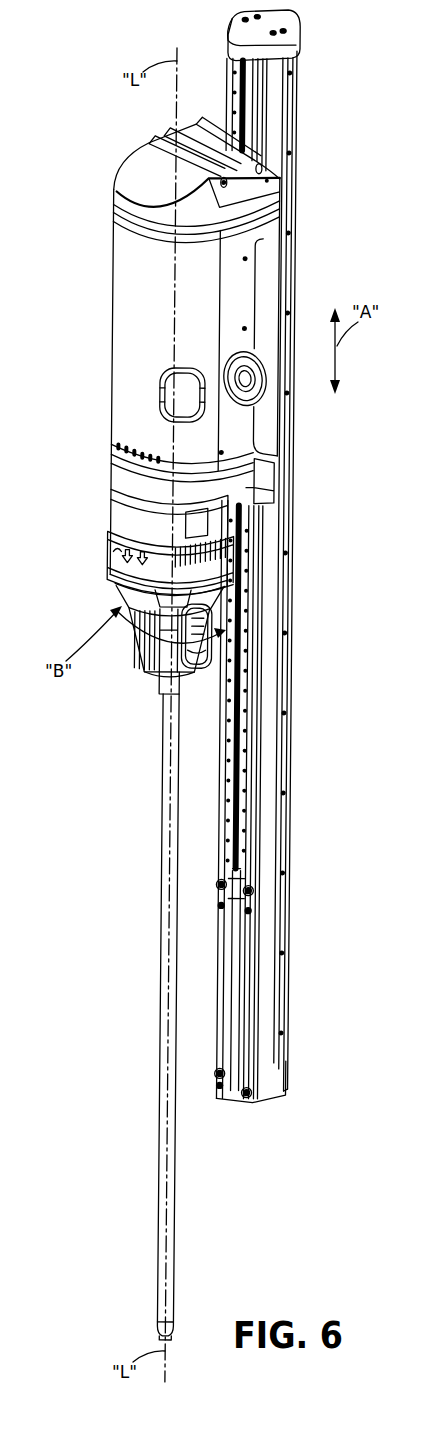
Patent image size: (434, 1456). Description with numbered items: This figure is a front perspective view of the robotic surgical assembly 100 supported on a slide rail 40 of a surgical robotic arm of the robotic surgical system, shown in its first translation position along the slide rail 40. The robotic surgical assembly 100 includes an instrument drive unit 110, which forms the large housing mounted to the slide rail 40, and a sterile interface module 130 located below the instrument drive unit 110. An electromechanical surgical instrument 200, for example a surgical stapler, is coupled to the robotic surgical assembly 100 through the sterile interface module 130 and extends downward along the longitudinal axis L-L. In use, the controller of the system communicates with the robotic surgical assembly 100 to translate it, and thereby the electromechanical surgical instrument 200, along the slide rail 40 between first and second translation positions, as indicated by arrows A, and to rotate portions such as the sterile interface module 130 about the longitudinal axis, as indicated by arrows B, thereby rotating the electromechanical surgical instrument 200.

The slide rail 40 is at (297, 74).
The robotic surgical assembly 100 is at (70, 178).
The instrument drive unit 110 is at (118, 412).
The sterile interface module 130 is at (124, 584).
The electromechanical surgical instrument 200 is at (153, 667).